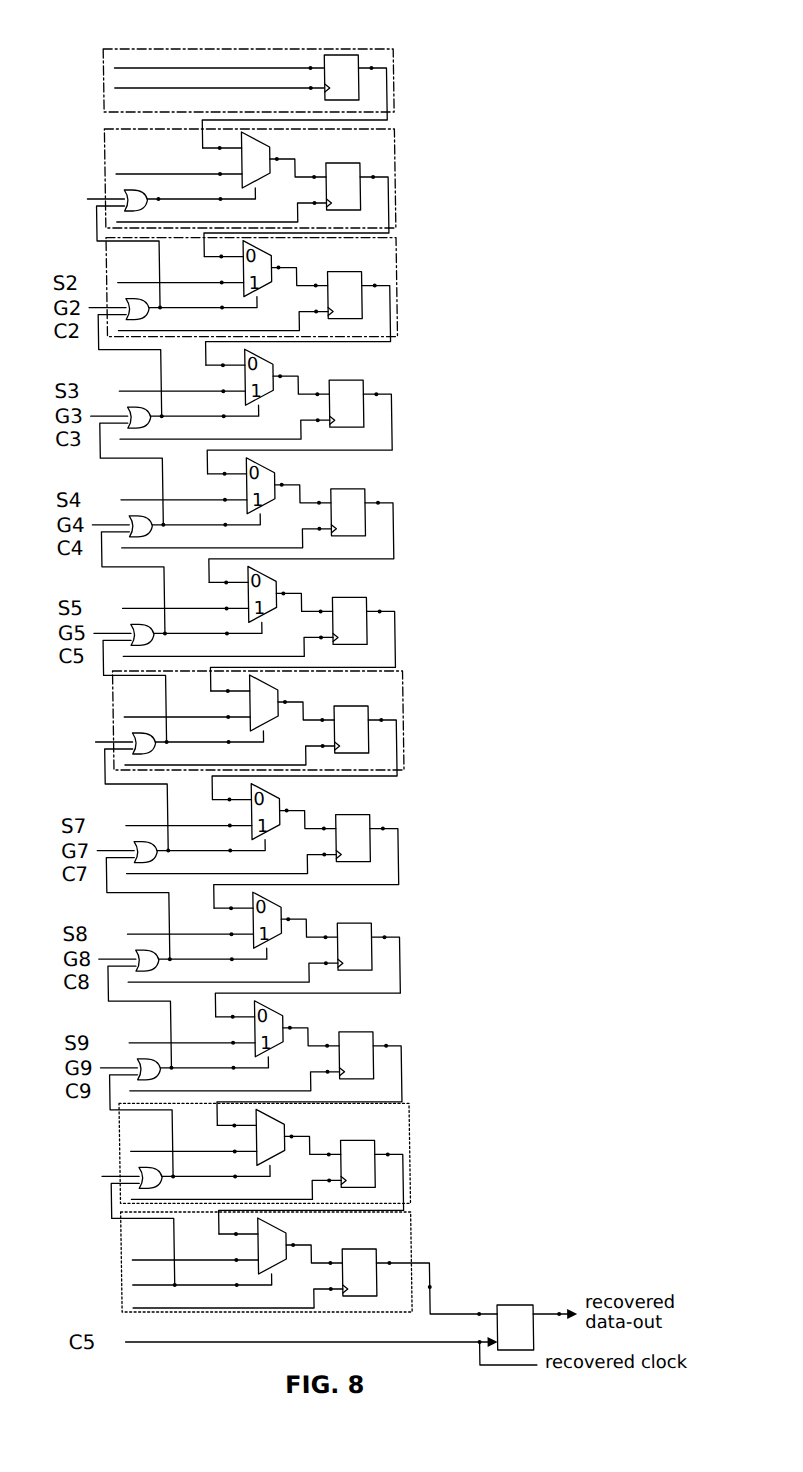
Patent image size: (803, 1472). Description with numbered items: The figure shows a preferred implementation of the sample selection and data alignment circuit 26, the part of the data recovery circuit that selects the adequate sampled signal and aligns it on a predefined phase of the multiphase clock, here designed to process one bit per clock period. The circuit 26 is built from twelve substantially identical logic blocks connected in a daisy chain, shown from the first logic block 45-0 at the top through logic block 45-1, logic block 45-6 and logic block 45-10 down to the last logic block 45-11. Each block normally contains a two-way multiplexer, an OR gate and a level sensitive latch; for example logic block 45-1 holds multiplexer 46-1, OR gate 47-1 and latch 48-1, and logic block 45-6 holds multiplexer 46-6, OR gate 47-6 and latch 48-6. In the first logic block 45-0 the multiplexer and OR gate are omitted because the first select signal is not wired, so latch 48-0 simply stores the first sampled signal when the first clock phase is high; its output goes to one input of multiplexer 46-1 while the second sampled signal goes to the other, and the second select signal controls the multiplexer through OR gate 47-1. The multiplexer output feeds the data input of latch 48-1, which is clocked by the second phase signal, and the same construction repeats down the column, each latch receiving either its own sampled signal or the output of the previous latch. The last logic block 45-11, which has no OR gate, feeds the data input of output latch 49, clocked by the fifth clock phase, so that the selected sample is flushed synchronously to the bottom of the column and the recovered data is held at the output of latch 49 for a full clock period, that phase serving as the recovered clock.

The first logic block 45-0 is at (254, 84).
The logic block 45-1 is at (255, 218).
The logic block 45-6 is at (265, 760).
The logic block 45-10 is at (276, 1193).
The last logic block 45-11 is at (282, 1265).
The two-way multiplexer 46-1 is at (282, 158).
The two-way multiplexer 46-6 is at (291, 700).
The OR gate 47-1 is at (160, 191).
The OR gate 47-6 is at (170, 748).
The level sensitive latch 48-0 is at (349, 55).
The level sensitive latch 48-1 is at (356, 169).
The level sensitive latch 48-6 is at (364, 711).
The output latch 49 is at (500, 1305).
The sample selection and data alignment circuit 26 is at (562, 354).